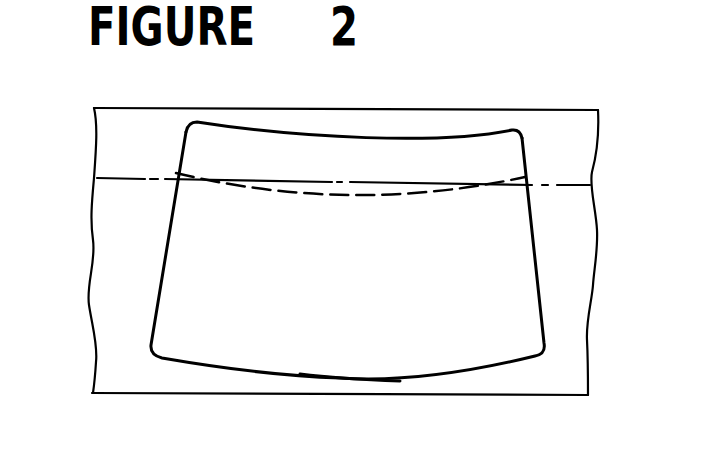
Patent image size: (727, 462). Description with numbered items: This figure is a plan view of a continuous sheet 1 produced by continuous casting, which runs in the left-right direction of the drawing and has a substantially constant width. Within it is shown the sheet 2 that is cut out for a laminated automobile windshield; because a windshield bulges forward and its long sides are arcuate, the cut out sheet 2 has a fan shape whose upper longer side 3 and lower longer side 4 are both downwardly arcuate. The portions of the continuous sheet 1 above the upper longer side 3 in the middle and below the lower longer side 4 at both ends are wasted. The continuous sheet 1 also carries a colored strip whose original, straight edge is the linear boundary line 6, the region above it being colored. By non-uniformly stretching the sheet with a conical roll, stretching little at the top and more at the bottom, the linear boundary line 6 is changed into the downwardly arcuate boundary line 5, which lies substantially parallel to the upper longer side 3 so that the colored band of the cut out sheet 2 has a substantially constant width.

The continuous sheet 1 is at (563, 232).
The cut out sheet 2 is at (197, 283).
The upper longer side 3 is at (268, 128).
The lower longer side 4 is at (180, 365).
The boundary line 5 is at (385, 194).
The linear boundary line 6 is at (326, 181).